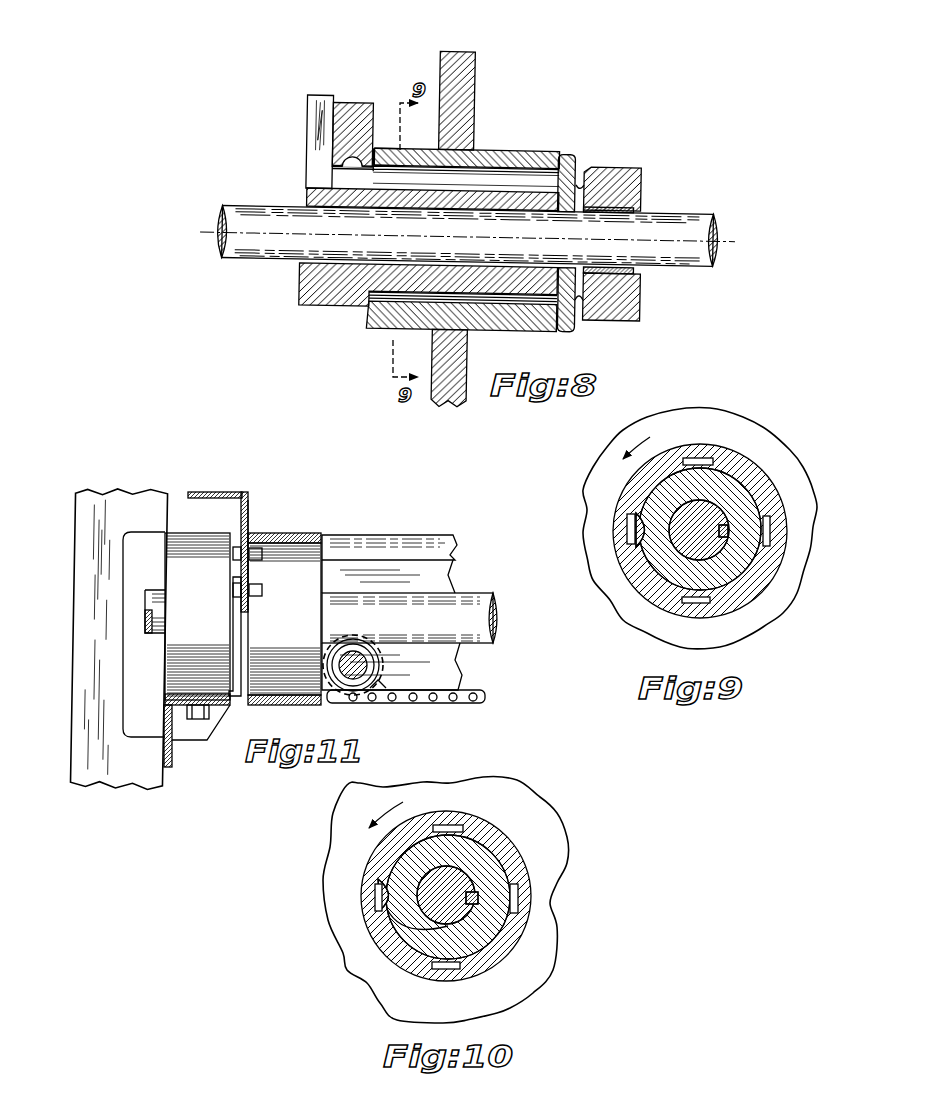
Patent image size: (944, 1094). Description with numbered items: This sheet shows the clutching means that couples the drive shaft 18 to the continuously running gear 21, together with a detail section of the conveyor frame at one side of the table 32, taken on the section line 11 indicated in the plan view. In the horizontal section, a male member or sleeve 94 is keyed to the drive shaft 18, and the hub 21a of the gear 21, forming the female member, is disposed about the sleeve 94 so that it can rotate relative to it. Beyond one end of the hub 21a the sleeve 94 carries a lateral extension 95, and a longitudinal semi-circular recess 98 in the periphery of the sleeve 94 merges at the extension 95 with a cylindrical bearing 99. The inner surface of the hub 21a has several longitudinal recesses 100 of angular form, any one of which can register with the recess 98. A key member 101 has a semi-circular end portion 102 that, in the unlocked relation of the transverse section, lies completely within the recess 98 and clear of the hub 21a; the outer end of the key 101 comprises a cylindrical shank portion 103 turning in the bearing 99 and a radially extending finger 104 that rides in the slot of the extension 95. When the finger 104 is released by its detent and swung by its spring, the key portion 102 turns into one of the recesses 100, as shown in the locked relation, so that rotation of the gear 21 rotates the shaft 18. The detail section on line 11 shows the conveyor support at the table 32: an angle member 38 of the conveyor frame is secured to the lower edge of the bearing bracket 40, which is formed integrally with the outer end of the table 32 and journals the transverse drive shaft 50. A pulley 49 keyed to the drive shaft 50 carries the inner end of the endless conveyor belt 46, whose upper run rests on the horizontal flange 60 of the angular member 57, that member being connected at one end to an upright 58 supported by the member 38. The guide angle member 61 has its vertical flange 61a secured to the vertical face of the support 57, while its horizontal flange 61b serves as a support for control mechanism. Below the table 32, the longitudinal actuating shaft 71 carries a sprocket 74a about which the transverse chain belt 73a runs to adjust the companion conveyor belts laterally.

In FIG. 11, the post 11 is at (86, 500).
In FIG. 8, the drive shaft 18 is at (246, 208).
In FIG. 9, the drive shaft 18 is at (717, 515).
In FIG. 10, the drive shaft 18 is at (460, 885).
In FIG. 8, the gear 21 is at (476, 92).
In FIG. 9, the gear 21 is at (786, 460).
In FIG. 10, the gear 21 is at (540, 819).
In FIG. 8, the hub 21a is at (508, 167).
In FIG. 9, the hub 21a is at (748, 468).
In FIG. 10, the hub 21a is at (488, 832).
In FIG. 11, the table 32 is at (402, 536).
In FIG. 11, the angle member 38 is at (174, 753).
In FIG. 11, the bearing bracket 40 is at (172, 644).
In FIG. 11, the endless conveyor belt 46 is at (302, 534).
In FIG. 11, the pulley 49 is at (313, 586).
In FIG. 11, the transverse drive shaft 50 is at (468, 601).
In FIG. 11, the angular member 57 is at (256, 579).
In FIG. 11, the upright 58 is at (240, 643).
In FIG. 11, the horizontal flange 60 is at (323, 541).
In FIG. 11, the angle member 61 is at (246, 492).
In FIG. 11, the vertical flange 61a is at (249, 515).
In FIG. 11, the horizontal flange 61b is at (228, 492).
In FIG. 11, the shaft 71 is at (366, 657).
In FIG. 11, the chain belt 73a is at (446, 704).
In FIG. 11, the sprocket 74a is at (370, 691).
In FIG. 8, the sleeve 94 is at (546, 298).
In FIG. 9, the sleeve 94 is at (740, 562).
In FIG. 10, the sleeve 94 is at (494, 868).
In FIG. 8, the lateral extension 95 is at (366, 104).
In FIG. 9, the longitudinal semi-circular recess 98 is at (644, 545).
In FIG. 10, the longitudinal semi-circular recess 98 is at (398, 871).
In FIG. 8, the cylindrical bearing 99 is at (341, 155).
In FIG. 8, the longitudinal recesses 100 is at (578, 166).
In FIG. 9, the longitudinal recesses 100 is at (690, 458).
In FIG. 10, the longitudinal recesses 100 is at (448, 828).
In FIG. 8, the key member 101 is at (508, 182).
In FIG. 8, the semi-circular end portion 102 is at (462, 182).
In FIG. 9, the semi-circular end portion 102 is at (640, 507).
In FIG. 10, the semi-circular end portion 102 is at (378, 888).
In FIG. 8, the cylindrical shank portion 103 is at (378, 142).
In FIG. 8, the radially extending finger 104 is at (310, 131).